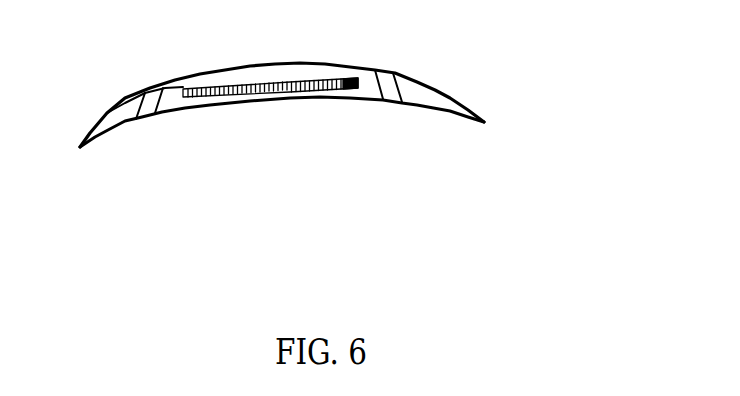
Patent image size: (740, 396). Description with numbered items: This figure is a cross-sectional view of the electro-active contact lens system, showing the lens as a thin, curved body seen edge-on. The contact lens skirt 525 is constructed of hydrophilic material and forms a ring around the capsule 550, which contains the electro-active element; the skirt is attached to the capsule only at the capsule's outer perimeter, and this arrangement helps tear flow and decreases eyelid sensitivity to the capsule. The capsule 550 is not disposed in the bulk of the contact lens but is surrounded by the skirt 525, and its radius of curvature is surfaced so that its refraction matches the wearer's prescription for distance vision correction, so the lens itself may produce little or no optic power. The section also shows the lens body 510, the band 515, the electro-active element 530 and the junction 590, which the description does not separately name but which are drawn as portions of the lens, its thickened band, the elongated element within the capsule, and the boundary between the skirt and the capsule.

The lens 510 is at (273, 92).
The band 515 is at (355, 65).
The end portion 525 is at (407, 93).
The light emitting strip 530 is at (353, 88).
The connector segment 550 is at (176, 103).
The spacer 590 is at (397, 88).